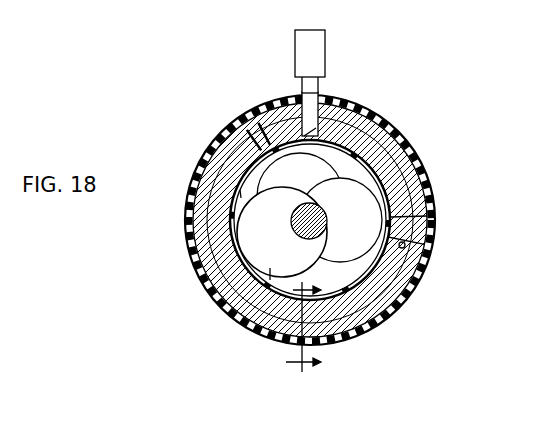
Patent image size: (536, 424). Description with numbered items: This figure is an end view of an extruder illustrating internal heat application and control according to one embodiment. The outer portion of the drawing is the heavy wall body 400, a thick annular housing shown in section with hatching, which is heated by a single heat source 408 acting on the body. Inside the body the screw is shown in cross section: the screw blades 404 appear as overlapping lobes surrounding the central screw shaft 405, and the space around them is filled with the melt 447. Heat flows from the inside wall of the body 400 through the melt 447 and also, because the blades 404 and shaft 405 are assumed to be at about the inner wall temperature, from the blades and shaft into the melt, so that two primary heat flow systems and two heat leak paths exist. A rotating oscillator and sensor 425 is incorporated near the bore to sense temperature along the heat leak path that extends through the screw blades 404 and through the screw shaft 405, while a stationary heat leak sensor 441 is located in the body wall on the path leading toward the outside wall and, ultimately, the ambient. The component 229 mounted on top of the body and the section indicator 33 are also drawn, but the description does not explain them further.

The heavy wall body 400 is at (382, 122).
The screw blades 404 is at (249, 307).
The screw shaft 405 is at (291, 228).
The heat source 408 is at (268, 148).
The rotating oscillator and sensor 425 is at (367, 216).
The stationary heat leak sensor 441 is at (437, 246).
The melt 447 is at (242, 194).
The valve block 229 is at (318, 58).
The section line 33 is at (315, 327).